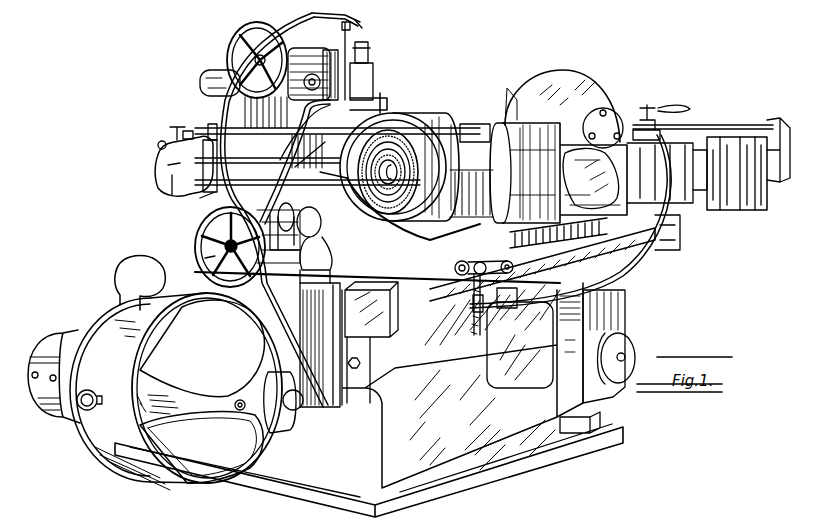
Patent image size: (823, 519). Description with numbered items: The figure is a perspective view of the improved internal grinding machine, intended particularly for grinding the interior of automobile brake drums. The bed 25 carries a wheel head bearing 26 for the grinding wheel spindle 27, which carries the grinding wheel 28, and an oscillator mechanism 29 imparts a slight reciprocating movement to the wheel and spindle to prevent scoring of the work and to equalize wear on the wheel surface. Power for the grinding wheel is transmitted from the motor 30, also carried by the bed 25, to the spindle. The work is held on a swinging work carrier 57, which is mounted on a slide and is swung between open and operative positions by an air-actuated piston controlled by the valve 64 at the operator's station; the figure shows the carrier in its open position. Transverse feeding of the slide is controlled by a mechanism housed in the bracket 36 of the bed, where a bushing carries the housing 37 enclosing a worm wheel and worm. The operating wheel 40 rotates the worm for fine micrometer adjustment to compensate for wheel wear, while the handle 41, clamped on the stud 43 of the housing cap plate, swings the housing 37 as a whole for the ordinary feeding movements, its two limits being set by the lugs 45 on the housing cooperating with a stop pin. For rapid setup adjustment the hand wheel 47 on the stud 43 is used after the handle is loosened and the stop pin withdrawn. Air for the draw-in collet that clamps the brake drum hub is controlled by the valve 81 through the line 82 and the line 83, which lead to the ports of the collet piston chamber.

The bed 25 is at (537, 430).
The wheel head bearing 26 is at (203, 197).
The grinding wheel spindle 27 is at (403, 163).
The grinding wheel 28 is at (433, 126).
The oscillator mechanism 29 is at (168, 160).
The motor 30 is at (100, 340).
The bracket 36 is at (350, 277).
The housing 37 is at (290, 210).
The operating wheel 40 is at (192, 257).
The handle 41 is at (278, 193).
The stud 43 is at (662, 247).
The lugs 45 is at (322, 262).
The hand wheel 47 is at (224, 247).
The work carrier 57 is at (305, 22).
The valve 64 is at (453, 282).
The valve 81 is at (640, 108).
The line 82 is at (703, 123).
The line 83 is at (750, 122).